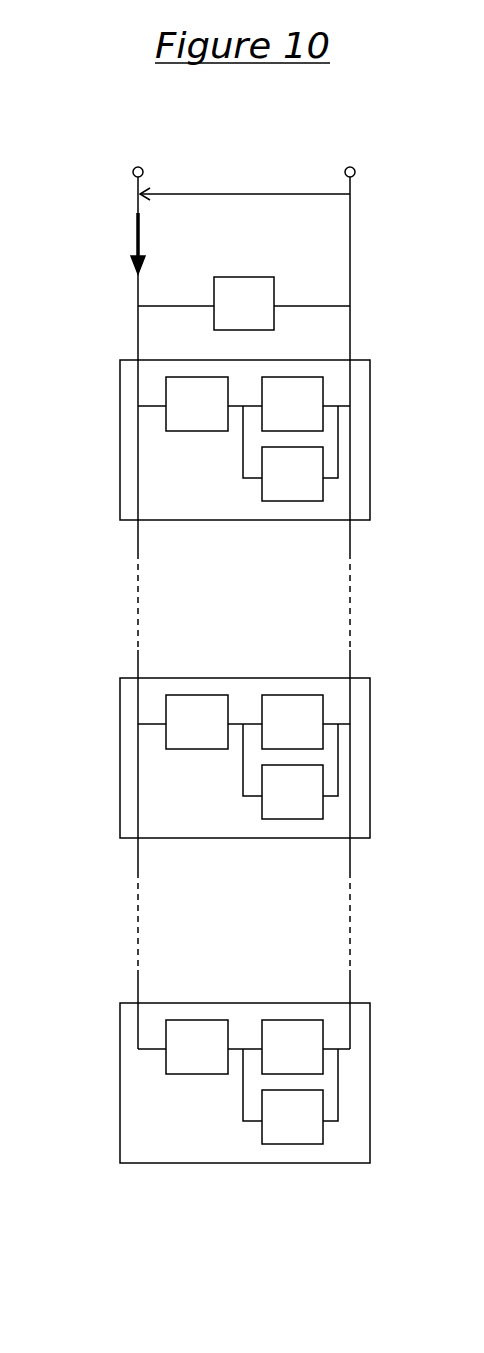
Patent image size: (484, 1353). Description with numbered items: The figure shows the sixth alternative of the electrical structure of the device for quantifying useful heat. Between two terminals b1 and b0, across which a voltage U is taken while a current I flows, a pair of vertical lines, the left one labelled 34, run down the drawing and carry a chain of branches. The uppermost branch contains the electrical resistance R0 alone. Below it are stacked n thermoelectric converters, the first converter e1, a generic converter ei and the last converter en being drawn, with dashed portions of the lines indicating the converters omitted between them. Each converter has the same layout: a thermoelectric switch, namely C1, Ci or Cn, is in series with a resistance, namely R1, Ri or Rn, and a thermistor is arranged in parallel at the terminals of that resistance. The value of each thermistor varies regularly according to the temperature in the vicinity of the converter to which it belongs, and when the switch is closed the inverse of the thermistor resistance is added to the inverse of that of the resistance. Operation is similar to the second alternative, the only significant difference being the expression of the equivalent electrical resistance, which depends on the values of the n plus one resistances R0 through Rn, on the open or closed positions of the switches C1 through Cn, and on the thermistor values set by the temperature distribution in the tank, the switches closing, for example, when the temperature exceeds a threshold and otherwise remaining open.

The equivalent electrical circuit of the battery 34 is at (137, 613).
The first terminal b1 is at (137, 154).
The second terminal b0 is at (356, 154).
The voltage across terminals U is at (245, 182).
The current I is at (131, 243).
The electrical resistance R0 is at (244, 303).
The thermoelectric converter e1 is at (213, 440).
The thermoelectric converter ei is at (213, 758).
The thermoelectric converter en is at (213, 1083).
The thermoelectric switch C1 is at (197, 404).
The resistance R1 is at (292, 404).
The thermoelectric switch Ci is at (197, 722).
The resistance Ri is at (292, 722).
The thermoelectric switch Cn is at (197, 1047).
The resistance Rn is at (292, 1047).